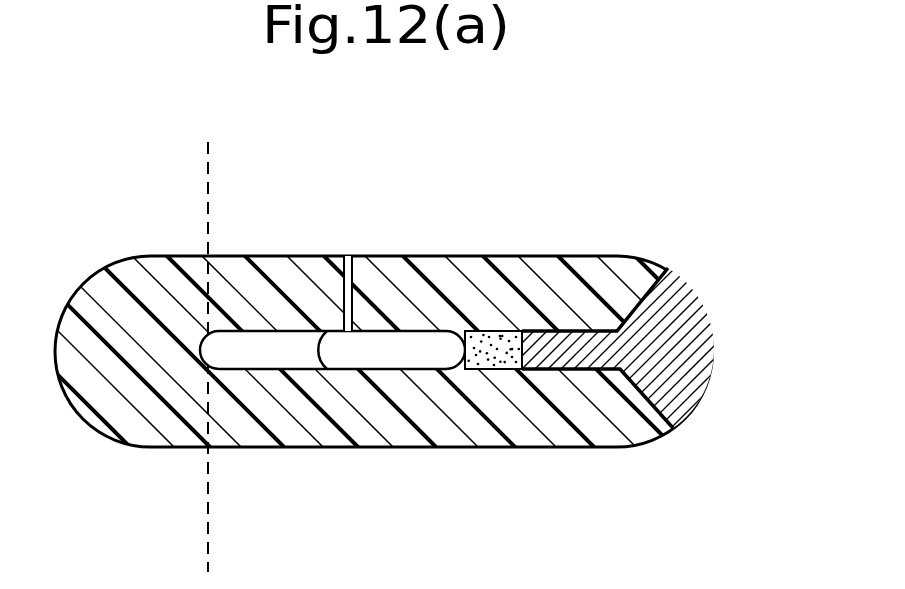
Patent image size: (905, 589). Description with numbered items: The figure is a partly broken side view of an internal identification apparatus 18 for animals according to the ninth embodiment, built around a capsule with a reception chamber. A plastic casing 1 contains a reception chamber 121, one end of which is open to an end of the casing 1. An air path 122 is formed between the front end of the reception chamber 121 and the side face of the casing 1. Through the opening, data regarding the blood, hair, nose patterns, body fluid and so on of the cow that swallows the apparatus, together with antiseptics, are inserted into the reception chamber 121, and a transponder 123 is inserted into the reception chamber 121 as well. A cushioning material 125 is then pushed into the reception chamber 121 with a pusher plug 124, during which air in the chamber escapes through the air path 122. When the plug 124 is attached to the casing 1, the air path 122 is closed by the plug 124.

The plastic casing 1 is at (631, 254).
The internal identification apparatus 18 is at (492, 232).
The reception chamber 121 is at (258, 345).
The air path 122 is at (345, 295).
The transponder 123 is at (395, 347).
The pusher plug 124 is at (689, 380).
The cushioning material 125 is at (502, 370).